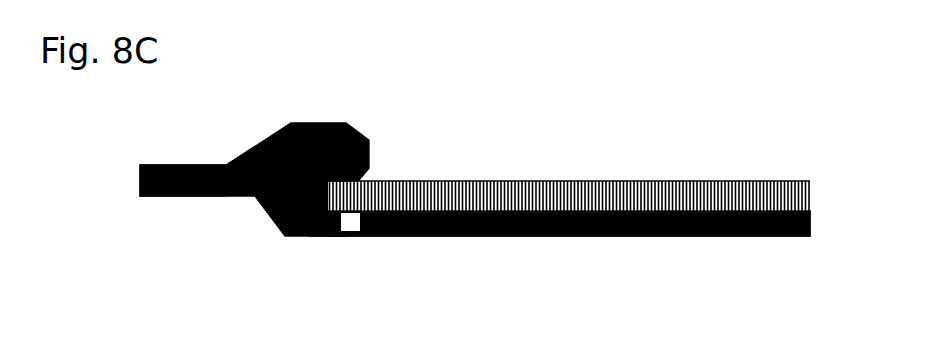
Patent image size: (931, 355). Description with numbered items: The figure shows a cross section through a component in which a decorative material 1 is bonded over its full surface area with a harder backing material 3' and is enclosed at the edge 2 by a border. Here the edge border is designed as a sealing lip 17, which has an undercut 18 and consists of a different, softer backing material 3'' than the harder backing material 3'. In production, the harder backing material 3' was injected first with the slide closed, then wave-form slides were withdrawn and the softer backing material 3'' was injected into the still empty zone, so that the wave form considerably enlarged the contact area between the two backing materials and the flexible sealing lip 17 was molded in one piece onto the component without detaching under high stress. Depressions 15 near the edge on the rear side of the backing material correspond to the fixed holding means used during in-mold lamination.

The decorative material 1 is at (513, 192).
The edge 2 is at (327, 225).
The harder backing material 3' is at (569, 253).
The softer backing material 3'' is at (475, 209).
The depressions near the edge 15 is at (340, 212).
The sealing lip 17 is at (157, 189).
The undercut 18 is at (350, 170).